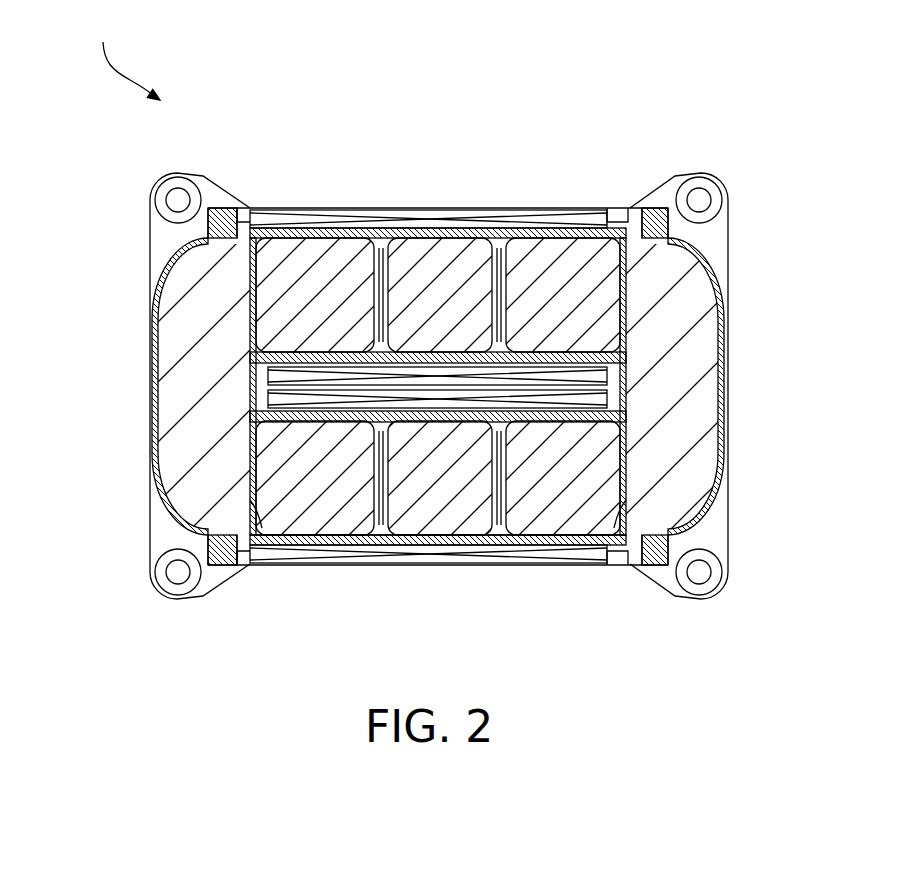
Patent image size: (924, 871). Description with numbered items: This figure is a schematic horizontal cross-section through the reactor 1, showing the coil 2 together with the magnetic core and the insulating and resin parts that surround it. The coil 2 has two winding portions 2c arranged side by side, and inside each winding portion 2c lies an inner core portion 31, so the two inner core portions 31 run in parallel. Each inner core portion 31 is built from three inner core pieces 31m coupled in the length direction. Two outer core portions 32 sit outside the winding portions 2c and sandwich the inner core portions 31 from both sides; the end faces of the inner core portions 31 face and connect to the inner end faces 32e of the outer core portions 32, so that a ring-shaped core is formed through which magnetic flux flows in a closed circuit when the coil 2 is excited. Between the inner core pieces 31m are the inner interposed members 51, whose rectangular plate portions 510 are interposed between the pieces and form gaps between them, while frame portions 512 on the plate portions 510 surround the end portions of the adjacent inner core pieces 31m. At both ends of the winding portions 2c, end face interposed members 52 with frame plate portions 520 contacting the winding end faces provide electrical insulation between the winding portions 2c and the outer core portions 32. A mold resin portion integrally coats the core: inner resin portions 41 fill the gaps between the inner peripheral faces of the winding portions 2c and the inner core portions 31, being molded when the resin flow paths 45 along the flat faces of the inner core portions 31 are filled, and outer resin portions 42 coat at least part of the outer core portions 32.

The reactor 1 is at (112, 37).
The coil 2 is at (581, 207).
The winding portions 2c is at (547, 206).
The inner core portions 31 is at (440, 238).
The inner core pieces 31m is at (328, 521).
The outer core portions 32 is at (183, 333).
The inner end faces 32e is at (264, 508).
The inner resin portions 41 is at (288, 231).
The outer resin portions 42 is at (151, 434).
The resin flow paths 45 is at (304, 541).
The inner interposed members 51 is at (375, 211).
The plate portions 510 is at (392, 557).
The frame portions 512 is at (366, 557).
The end face interposed members 52 is at (248, 206).
The frame plate portions 520 is at (237, 568).